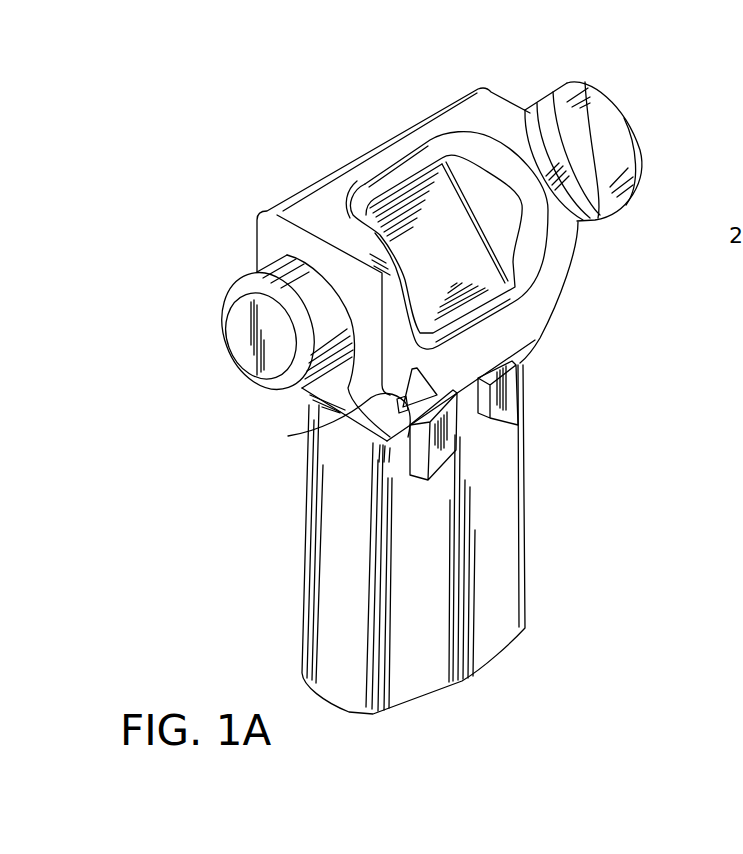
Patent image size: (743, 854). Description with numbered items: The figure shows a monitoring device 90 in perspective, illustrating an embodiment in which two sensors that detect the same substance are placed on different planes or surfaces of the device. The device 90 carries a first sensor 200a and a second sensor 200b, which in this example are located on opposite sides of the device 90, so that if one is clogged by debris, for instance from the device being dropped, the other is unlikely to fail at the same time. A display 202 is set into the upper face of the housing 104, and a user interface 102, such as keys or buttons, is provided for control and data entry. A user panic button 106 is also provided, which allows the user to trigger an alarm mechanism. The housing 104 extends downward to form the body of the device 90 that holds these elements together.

The monitoring device 90 is at (330, 125).
The sensor 200a is at (240, 333).
The sensor 200b is at (630, 127).
The display 202 is at (468, 268).
The user panic button 106 is at (300, 437).
The housing 104 is at (296, 558).
The user interface 102 is at (440, 452).